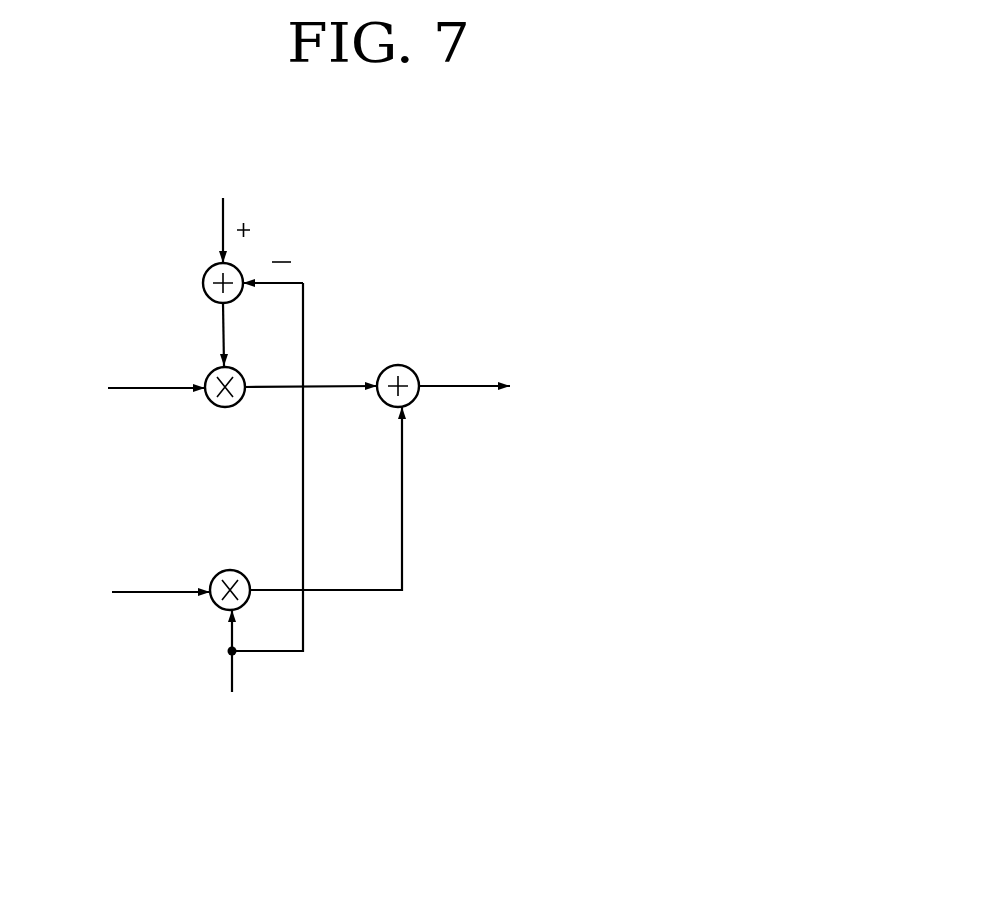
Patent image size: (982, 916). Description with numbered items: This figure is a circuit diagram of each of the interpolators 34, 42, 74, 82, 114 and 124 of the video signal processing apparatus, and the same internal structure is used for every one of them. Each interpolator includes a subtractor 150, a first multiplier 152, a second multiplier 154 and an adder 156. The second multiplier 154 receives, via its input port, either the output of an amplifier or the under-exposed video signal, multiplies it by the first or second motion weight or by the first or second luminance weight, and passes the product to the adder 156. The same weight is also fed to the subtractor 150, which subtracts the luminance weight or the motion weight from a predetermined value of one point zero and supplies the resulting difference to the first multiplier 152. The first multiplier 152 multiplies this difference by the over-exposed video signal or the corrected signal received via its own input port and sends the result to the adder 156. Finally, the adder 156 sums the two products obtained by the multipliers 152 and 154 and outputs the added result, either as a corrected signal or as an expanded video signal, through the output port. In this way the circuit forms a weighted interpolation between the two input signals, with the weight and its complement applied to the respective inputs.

The interpolator 34 is at (426, 216).
The interpolator 42 is at (327, 492).
The interpolator 74 is at (327, 492).
The interpolator 82 is at (327, 492).
The interpolator 114 is at (327, 492).
The interpolator 124 is at (327, 492).
The subtractor 150 is at (203, 283).
The multiplier 152 is at (225, 407).
The multiplier 154 is at (212, 606).
The adder 156 is at (398, 364).